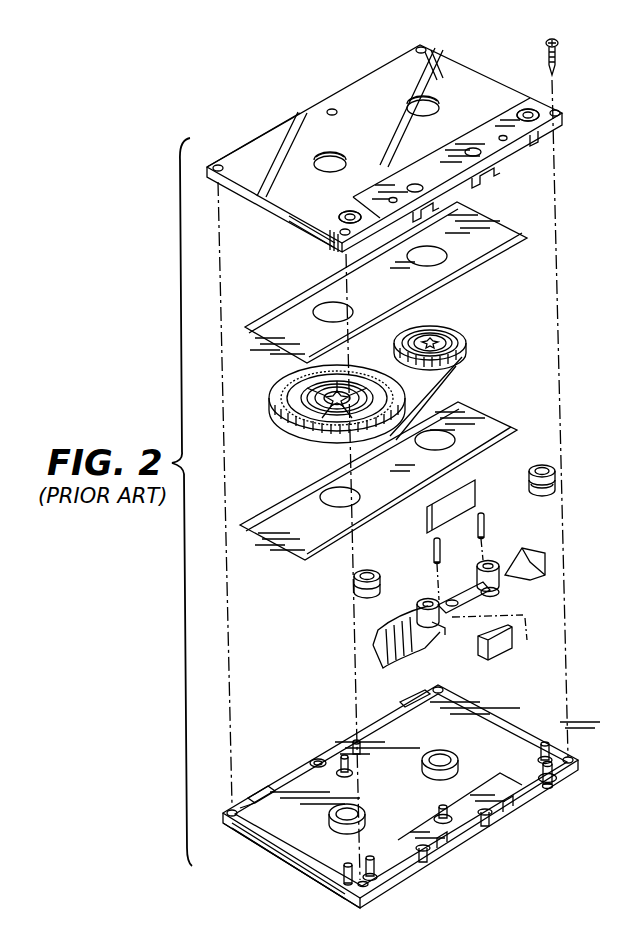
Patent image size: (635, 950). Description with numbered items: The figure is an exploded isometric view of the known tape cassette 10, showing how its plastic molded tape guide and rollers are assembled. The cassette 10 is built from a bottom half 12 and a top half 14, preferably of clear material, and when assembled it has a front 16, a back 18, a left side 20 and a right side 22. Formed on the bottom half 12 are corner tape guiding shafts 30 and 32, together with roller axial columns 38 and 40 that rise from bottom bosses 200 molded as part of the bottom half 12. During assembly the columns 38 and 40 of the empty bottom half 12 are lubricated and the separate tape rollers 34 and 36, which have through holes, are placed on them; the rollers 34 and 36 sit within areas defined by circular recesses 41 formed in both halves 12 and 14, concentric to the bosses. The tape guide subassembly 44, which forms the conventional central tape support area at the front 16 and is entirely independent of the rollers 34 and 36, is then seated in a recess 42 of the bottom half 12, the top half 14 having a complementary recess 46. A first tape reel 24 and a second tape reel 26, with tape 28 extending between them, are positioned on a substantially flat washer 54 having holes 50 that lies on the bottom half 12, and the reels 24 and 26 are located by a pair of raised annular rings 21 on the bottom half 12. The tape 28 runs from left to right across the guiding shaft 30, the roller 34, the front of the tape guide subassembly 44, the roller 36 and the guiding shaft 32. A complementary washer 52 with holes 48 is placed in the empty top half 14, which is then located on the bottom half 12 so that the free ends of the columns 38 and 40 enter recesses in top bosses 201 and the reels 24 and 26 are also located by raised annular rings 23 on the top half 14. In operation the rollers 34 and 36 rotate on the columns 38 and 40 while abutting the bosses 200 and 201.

The tape cassette 10 is at (616, 428).
The bottom half 12 is at (398, 772).
The top half 14 is at (371, 134).
The front 16 is at (478, 178).
The back 18 is at (320, 97).
The left side 20 is at (285, 219).
The raised annular rings 21 is at (457, 755).
The right side 22 is at (468, 72).
The raised annular rings 23 is at (440, 104).
The first tape reel 24 is at (305, 438).
The second tape reel 26 is at (447, 327).
The tape 28 is at (445, 387).
The corner tape guiding shaft 30 is at (333, 881).
The corner tape guiding shaft 32 is at (545, 742).
The tape roller 34 is at (355, 592).
The tape roller 36 is at (556, 482).
The roller axial column 38 is at (374, 880).
The roller axial column 40 is at (553, 782).
The circular recesses 41 is at (525, 108).
The recess 42 is at (497, 788).
The tape guide subassembly 44 is at (338, 668).
The complementary recess 46 is at (418, 163).
The holes 48 is at (417, 266).
The holes 50 is at (421, 444).
The complementary washer 52 is at (482, 267).
The substantially flat washer 54 is at (493, 445).
The bottom bosses 200 is at (552, 793).
The top bosses 201 is at (536, 130).